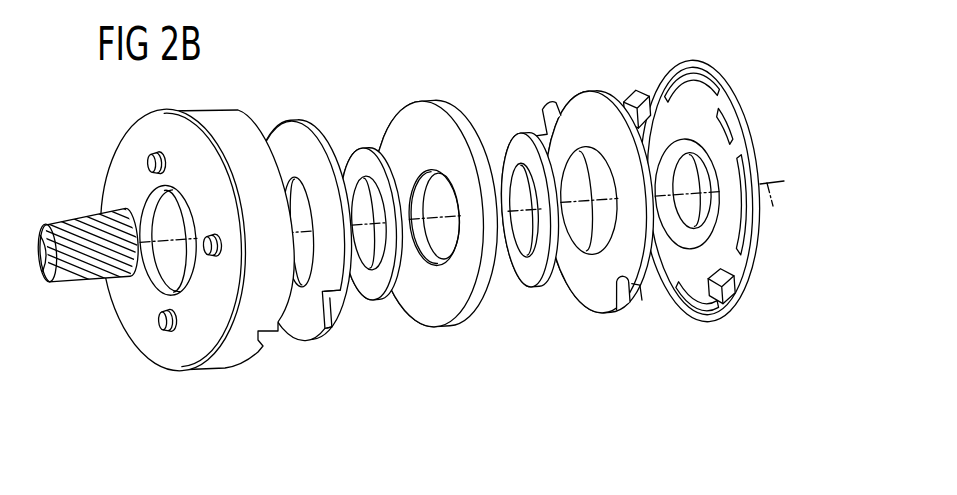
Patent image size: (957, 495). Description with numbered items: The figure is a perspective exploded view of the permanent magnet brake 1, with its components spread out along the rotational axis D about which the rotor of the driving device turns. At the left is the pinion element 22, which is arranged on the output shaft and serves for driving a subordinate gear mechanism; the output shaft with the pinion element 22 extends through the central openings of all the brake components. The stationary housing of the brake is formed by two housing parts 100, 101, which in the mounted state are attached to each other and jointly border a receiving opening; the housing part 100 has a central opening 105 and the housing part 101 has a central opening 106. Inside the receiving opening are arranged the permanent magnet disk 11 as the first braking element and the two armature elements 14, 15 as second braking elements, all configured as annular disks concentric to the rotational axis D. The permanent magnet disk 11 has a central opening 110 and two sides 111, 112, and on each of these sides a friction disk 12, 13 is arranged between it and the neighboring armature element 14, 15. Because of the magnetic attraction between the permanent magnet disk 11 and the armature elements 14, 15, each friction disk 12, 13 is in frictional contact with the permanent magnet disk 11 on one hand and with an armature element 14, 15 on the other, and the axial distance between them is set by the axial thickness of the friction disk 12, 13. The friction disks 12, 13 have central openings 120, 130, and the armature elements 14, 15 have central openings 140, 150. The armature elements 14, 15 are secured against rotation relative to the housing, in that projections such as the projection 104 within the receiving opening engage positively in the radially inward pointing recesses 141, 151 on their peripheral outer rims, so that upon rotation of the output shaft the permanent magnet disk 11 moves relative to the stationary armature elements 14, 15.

The permanent magnet brake 1 is at (404, 86).
The pinion element 22 is at (88, 281).
The housing part 100 is at (224, 358).
The opening 105 is at (180, 267).
The armature element 14 is at (283, 329).
The opening 140 is at (300, 302).
The recess 141 is at (331, 323).
The friction disk 12 is at (376, 299).
The opening 120 is at (360, 193).
The permanent magnet disk 11 is at (440, 243).
The opening 110 is at (442, 191).
The side 111 is at (444, 311).
The side 112 is at (486, 315).
The friction disk 13 is at (529, 289).
The opening 130 is at (516, 176).
The armature element 15 is at (596, 306).
The opening 150 is at (585, 188).
The recess 151 is at (546, 128).
The housing part 101 is at (687, 323).
The projection 104 is at (638, 92).
The opening 106 is at (699, 180).
The rotational axis D is at (772, 212).